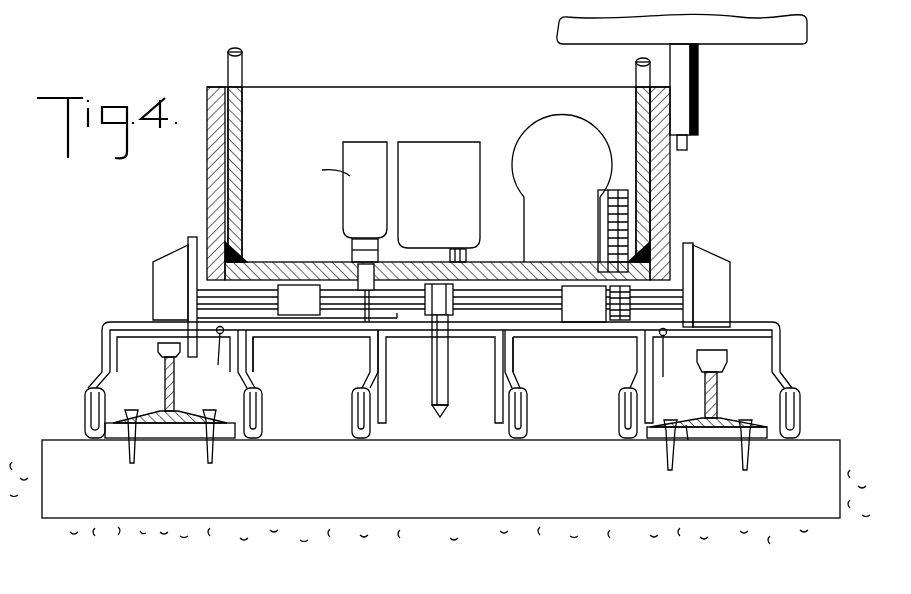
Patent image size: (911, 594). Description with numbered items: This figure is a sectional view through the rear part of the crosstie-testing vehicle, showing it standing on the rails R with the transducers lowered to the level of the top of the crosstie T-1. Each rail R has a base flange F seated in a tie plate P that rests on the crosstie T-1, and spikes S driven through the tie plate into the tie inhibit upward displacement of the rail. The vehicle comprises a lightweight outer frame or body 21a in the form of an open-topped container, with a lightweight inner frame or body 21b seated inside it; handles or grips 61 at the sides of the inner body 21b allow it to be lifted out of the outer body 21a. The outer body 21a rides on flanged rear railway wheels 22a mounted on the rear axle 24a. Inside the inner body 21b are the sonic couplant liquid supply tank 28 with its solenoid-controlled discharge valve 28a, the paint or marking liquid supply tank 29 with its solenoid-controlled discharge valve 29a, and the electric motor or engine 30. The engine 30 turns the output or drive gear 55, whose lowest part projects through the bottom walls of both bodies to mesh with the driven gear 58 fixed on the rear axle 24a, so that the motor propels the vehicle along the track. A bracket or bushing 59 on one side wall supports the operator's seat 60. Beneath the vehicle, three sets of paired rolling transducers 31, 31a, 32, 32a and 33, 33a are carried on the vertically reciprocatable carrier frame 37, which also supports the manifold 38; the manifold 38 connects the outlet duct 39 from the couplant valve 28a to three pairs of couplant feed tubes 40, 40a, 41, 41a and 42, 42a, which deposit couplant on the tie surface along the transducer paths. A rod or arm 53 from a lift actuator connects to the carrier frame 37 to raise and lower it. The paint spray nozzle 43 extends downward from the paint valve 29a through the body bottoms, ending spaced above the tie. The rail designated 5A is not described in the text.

The outer frame or body 21a is at (666, 195).
The inner frame or body 21b is at (343, 90).
The rear railway wheels 22a is at (166, 262).
The rear axle 24a is at (487, 304).
The sonic couplant liquid supply tank 28 is at (362, 140).
The solenoid-controlled discharge valve 28a is at (362, 246).
The paint or marking liquid supply tank 29 is at (466, 142).
The solenoid-controlled discharge valve 29a is at (468, 256).
The electric motor or engine 30 is at (585, 136).
The rolling transducer 31 is at (618, 414).
The rolling transducer 31a is at (798, 402).
The rolling transducer 32 is at (351, 402).
The rolling transducer 32a is at (517, 432).
The rolling transducer 33 is at (88, 428).
The rolling transducer 33a is at (262, 428).
The carrier frame 37 is at (317, 330).
The manifold 38 is at (122, 320).
The outlet duct 39 is at (360, 297).
The couplant feed tube 40 is at (633, 362).
The couplant feed tube 40a is at (780, 336).
The couplant feed tube 41 is at (367, 352).
The couplant feed tube 41a is at (524, 354).
The couplant feed tube 42 is at (104, 348).
The couplant feed tube 42a is at (247, 352).
The paint spray nozzle 43 is at (449, 400).
The rod or arm 53 is at (708, 376).
The output or drive gear 55 is at (600, 196).
The driven gear 58 is at (612, 324).
The bracket or bushing 59 is at (692, 118).
The operator's seat 60 is at (768, 34).
The handles or grips 61 is at (226, 62).
The rail 5A is at (170, 383).
The rails R is at (714, 412).
The tie plate P is at (713, 440).
The spikes S is at (750, 458).
The base flange F is at (689, 442).
The railroad crosstie T-1 is at (430, 505).